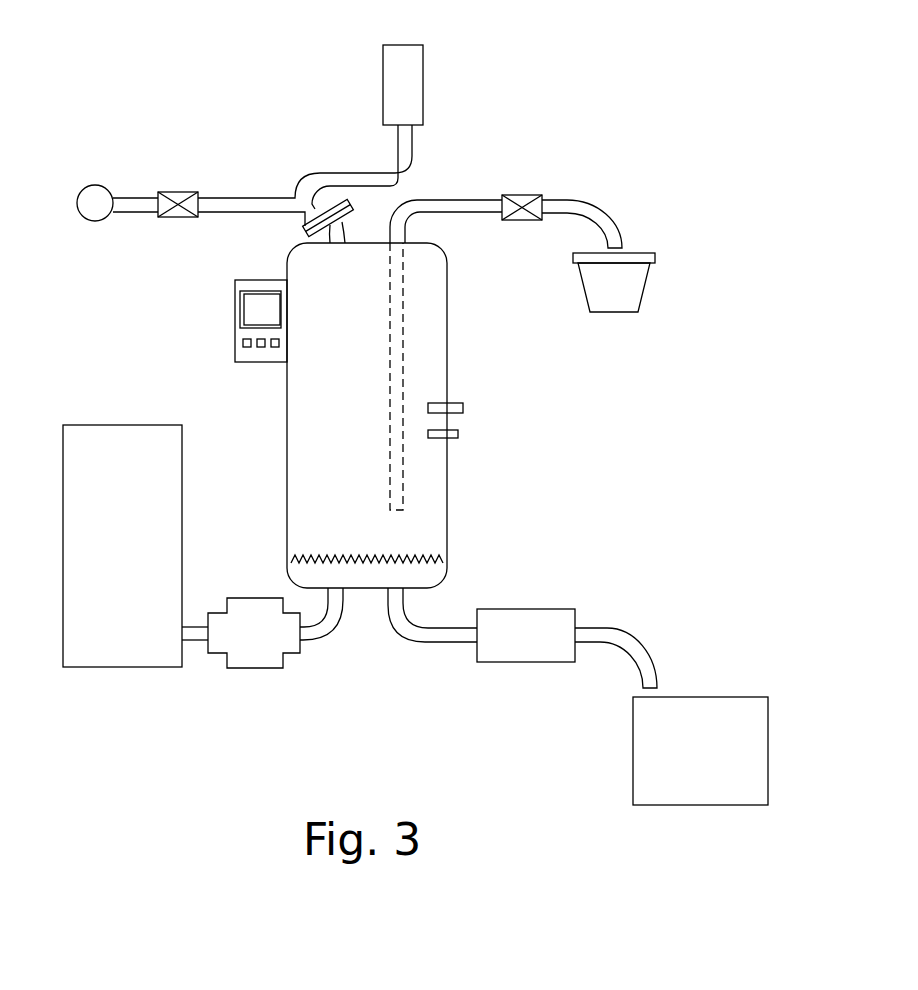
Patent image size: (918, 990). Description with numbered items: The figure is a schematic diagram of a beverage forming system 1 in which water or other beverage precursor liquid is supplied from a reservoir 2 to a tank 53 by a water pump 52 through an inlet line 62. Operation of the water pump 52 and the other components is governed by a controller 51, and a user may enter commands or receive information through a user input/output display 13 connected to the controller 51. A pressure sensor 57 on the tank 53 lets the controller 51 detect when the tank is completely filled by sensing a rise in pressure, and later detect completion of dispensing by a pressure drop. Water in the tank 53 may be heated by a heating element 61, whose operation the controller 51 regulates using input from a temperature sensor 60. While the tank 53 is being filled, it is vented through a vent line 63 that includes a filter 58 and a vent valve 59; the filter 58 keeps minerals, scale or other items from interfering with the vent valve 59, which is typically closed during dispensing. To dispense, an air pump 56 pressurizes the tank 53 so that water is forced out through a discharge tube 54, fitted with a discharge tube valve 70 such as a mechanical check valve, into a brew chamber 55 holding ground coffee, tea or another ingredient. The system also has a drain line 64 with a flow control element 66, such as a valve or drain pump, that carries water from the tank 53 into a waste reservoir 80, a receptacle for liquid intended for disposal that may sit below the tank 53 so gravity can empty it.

The beverage forming system 1 is at (167, 83).
The reservoir 2 is at (108, 655).
The user input/output display 13 is at (245, 297).
The controller 51 is at (235, 320).
The water pump 52 is at (252, 663).
The tank 53 is at (446, 358).
The discharge tube 54 is at (442, 198).
The brew chamber 55 is at (647, 277).
The air pump 56 is at (423, 80).
The pressure sensor 57 is at (448, 430).
The filter 58 is at (307, 224).
The vent valve 59 is at (168, 192).
The temperature sensor 60 is at (455, 402).
The heating element 61 is at (415, 556).
The inlet line 62 is at (333, 625).
The vent line 63 is at (245, 197).
The drain line 64 is at (628, 633).
The flow control element 66 is at (528, 662).
The discharge tube valve 70 is at (525, 195).
The waste reservoir 80 is at (735, 707).